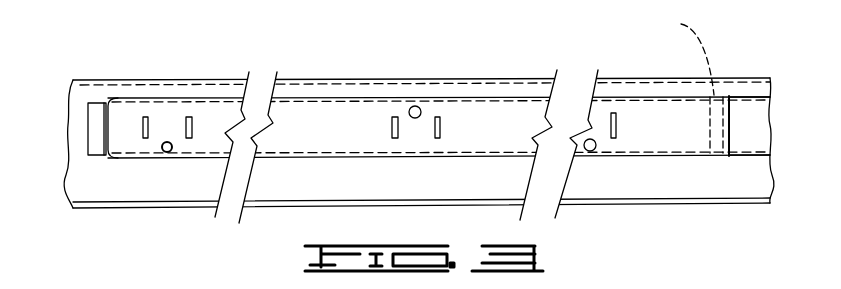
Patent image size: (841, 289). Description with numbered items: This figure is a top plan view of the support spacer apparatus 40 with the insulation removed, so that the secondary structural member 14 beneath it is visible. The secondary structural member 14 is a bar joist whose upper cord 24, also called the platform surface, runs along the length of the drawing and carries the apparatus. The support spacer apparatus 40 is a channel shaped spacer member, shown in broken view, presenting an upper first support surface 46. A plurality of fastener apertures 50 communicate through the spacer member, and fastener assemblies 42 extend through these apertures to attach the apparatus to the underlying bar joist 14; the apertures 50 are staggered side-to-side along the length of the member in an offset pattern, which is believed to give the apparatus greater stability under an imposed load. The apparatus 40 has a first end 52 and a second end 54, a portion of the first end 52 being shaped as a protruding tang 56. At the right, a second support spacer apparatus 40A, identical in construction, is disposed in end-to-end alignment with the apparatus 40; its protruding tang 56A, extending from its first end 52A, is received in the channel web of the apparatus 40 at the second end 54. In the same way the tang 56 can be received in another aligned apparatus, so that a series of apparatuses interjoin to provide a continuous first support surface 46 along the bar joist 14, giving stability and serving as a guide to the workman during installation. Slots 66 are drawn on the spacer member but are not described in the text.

The secondary structural member 14 is at (286, 210).
The upper cord 24 is at (165, 189).
The support spacer apparatus 40 is at (152, 97).
The second support spacer apparatus 40A is at (742, 110).
The fastener assembly 42 is at (170, 142).
The upper first support surface 46 is at (344, 138).
The fastener aperture 50 is at (413, 118).
The first end 52 is at (117, 98).
The first end 52A is at (731, 97).
The second end 54 is at (693, 105).
The protruding tang 56 is at (97, 103).
The protruding tang 56A is at (680, 55).
The slot 66 is at (143, 128).